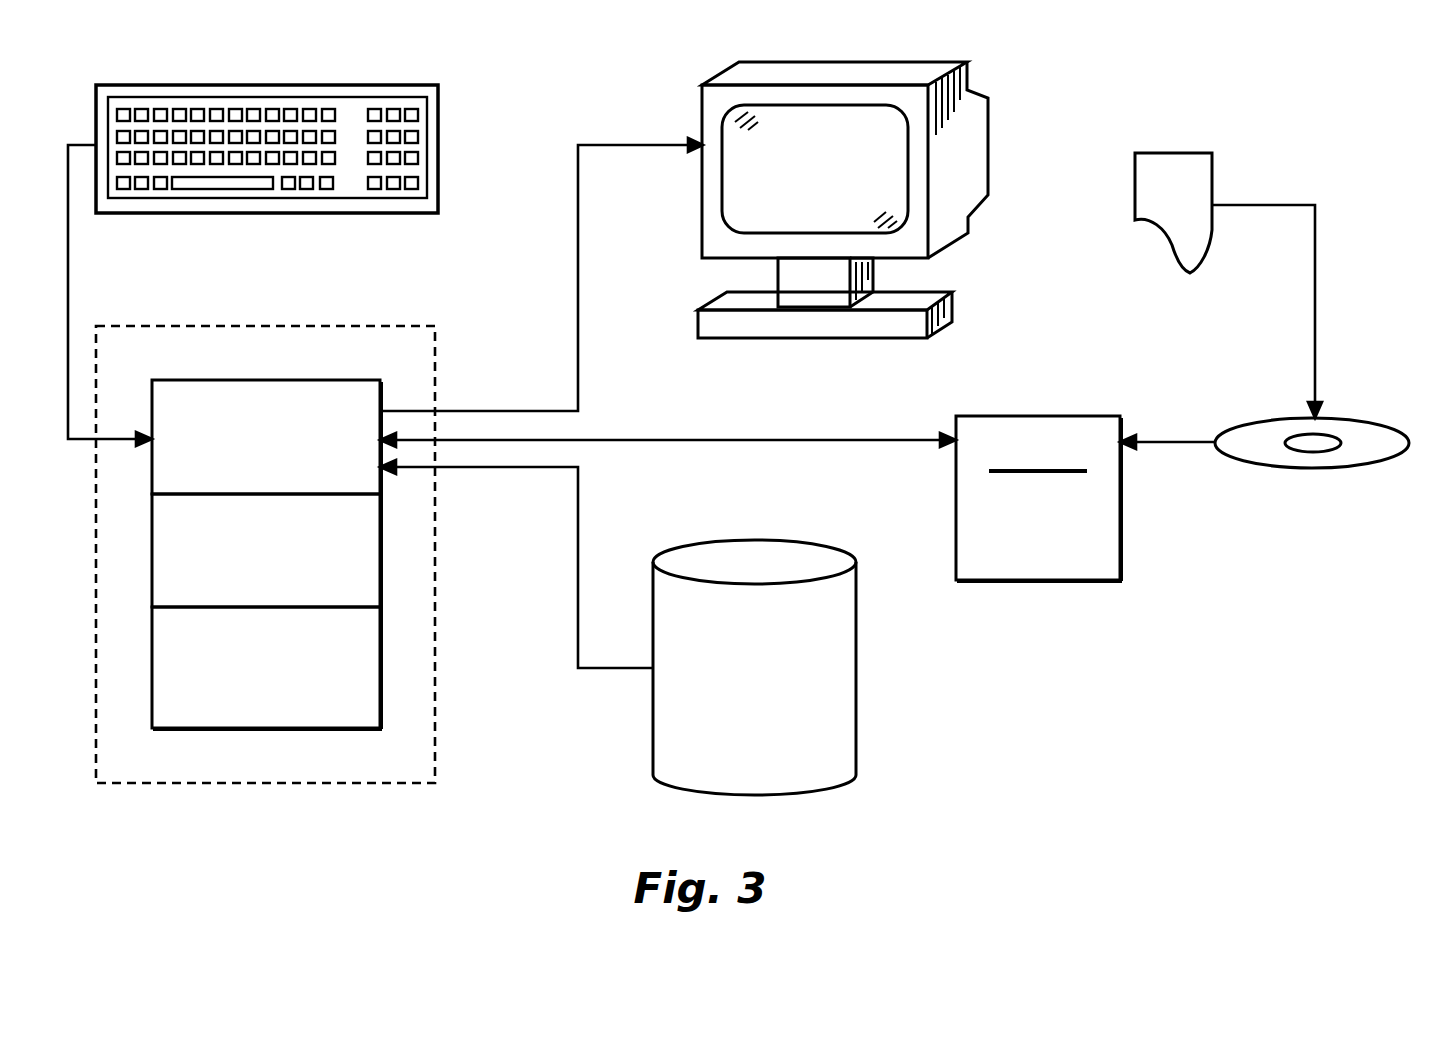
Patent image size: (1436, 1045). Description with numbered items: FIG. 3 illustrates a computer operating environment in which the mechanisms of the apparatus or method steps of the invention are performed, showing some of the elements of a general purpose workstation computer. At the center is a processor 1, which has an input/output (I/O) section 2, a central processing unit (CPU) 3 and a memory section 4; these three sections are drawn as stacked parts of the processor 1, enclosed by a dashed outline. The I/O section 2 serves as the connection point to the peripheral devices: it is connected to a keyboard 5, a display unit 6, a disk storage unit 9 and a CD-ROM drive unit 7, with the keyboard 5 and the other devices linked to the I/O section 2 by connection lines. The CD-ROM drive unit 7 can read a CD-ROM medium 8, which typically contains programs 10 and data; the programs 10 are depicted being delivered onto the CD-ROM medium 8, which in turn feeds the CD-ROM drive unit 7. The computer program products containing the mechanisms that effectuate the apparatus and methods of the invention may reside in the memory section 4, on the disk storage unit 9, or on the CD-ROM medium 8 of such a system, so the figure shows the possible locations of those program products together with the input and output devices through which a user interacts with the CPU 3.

The processor 1 is at (383, 325).
The input/output (I/O) section 2 is at (242, 387).
The central processing unit (CPU) 3 is at (380, 568).
The memory section 4 is at (380, 710).
The keyboard 5 is at (415, 88).
The display unit 6 is at (913, 73).
The CD-ROM drive unit 7 is at (987, 413).
The CD-ROM medium 8 is at (1285, 425).
The disk storage unit 9 is at (852, 642).
The programs 10 is at (1150, 160).